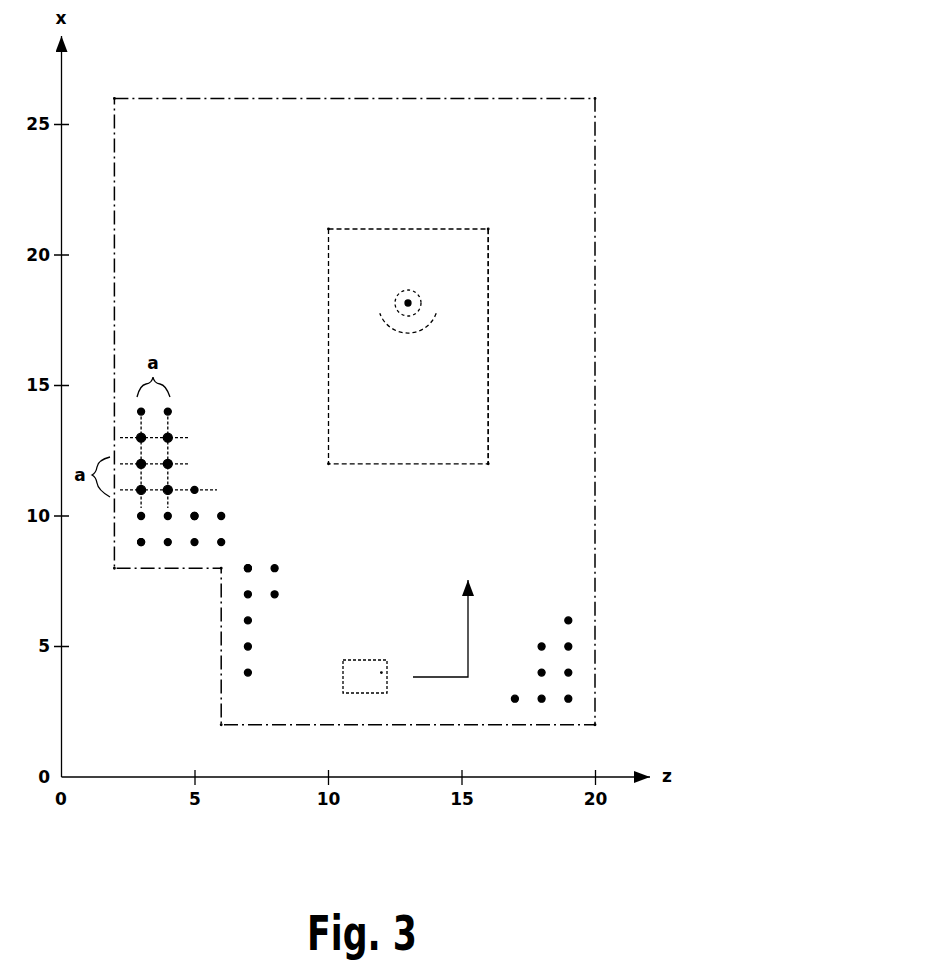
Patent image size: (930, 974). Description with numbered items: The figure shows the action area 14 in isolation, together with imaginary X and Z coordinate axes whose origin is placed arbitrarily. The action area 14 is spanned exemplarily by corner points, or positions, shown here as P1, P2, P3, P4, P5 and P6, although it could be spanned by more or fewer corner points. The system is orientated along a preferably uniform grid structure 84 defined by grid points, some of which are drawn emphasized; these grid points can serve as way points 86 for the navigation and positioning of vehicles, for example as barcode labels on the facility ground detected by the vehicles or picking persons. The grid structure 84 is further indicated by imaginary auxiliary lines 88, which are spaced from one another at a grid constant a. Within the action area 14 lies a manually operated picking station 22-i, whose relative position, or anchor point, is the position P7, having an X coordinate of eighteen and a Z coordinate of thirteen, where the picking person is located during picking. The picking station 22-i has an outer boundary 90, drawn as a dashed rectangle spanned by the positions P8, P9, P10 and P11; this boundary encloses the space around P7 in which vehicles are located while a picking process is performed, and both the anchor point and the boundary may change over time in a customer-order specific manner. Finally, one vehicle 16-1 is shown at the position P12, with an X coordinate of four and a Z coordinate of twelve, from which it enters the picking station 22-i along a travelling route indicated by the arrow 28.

The action area 14 is at (514, 151).
The picking station 22-i is at (358, 437).
The outer boundary 90 is at (489, 344).
The grid structure 84 is at (188, 418).
The auxiliary lines 88 is at (217, 489).
The way points 86 is at (192, 523).
The vehicle 16-1 is at (350, 660).
The arrow 28 is at (476, 601).
The corner point P1 is at (221, 725).
The corner point P2 is at (595, 725).
The corner point P3 is at (595, 98).
The corner point P4 is at (114, 98).
The corner point P5 is at (114, 568).
The corner point P6 is at (221, 568).
The relative position of the picking station P7 is at (408, 299).
The position P8 is at (329, 464).
The position P9 is at (489, 464).
The position P10 is at (489, 229).
The position P11 is at (329, 229).
The position P12 is at (381, 670).